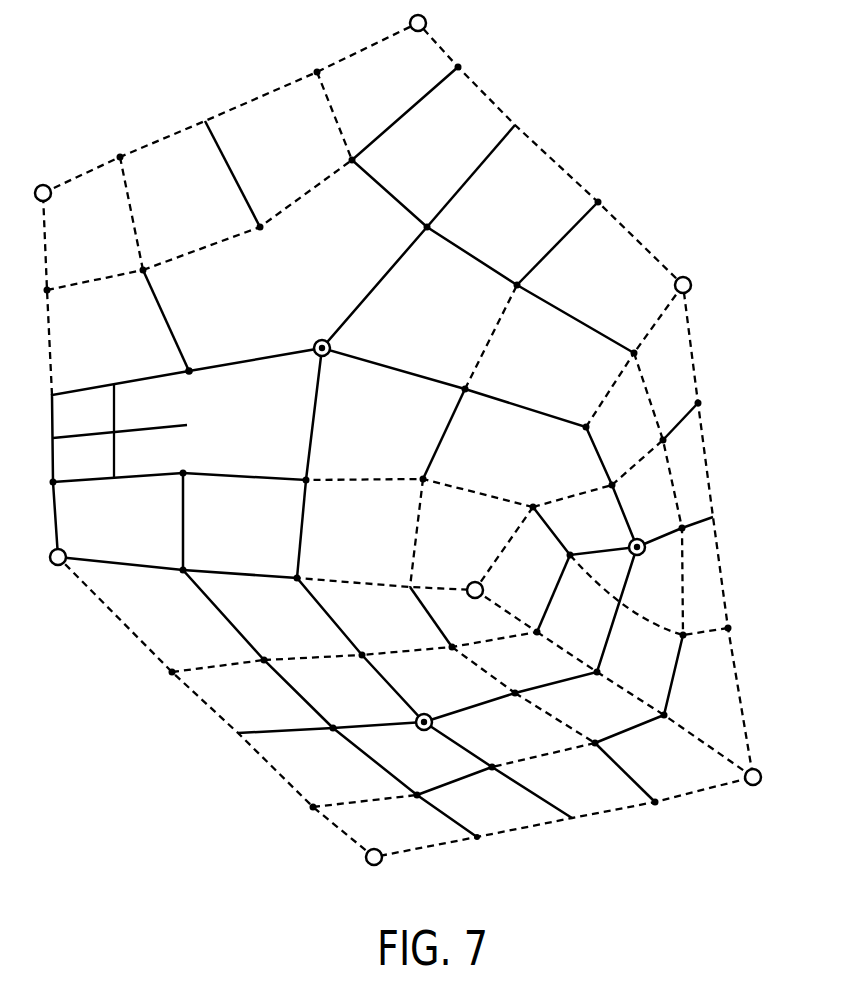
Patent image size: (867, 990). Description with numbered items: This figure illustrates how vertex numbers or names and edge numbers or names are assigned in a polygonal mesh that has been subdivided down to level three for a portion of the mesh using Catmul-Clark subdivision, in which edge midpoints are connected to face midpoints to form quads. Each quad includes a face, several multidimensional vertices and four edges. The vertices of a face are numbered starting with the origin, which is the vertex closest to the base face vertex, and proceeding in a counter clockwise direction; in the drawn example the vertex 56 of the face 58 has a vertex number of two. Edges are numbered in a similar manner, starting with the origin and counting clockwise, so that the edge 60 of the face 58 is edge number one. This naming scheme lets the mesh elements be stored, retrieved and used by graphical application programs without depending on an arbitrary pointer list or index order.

The vertex 56 is at (191, 368).
The face 58 is at (125, 415).
The edge 60 is at (203, 400).